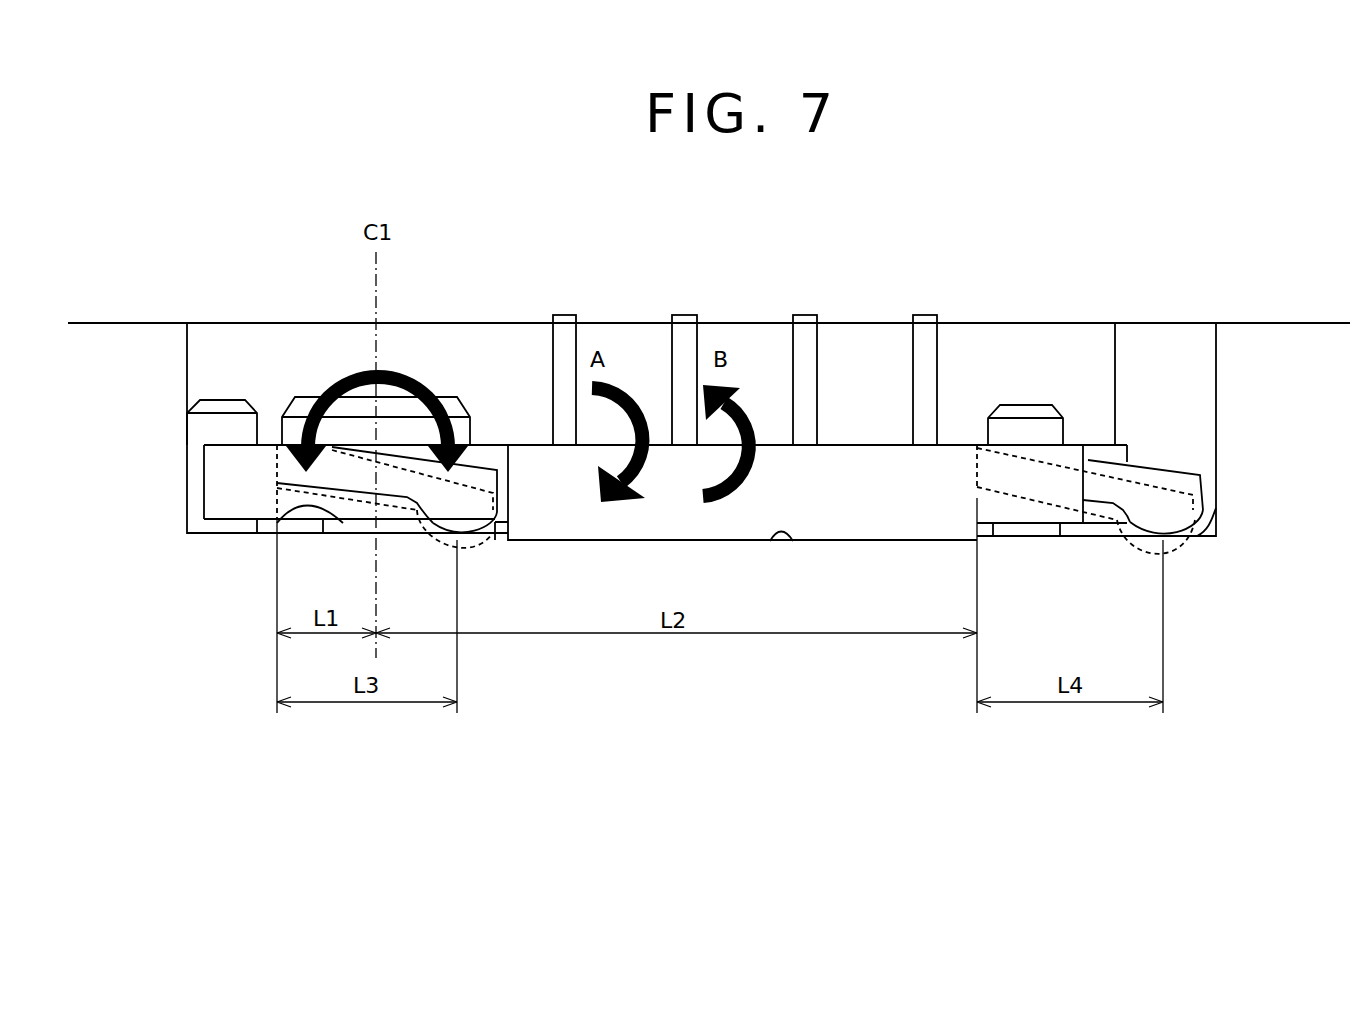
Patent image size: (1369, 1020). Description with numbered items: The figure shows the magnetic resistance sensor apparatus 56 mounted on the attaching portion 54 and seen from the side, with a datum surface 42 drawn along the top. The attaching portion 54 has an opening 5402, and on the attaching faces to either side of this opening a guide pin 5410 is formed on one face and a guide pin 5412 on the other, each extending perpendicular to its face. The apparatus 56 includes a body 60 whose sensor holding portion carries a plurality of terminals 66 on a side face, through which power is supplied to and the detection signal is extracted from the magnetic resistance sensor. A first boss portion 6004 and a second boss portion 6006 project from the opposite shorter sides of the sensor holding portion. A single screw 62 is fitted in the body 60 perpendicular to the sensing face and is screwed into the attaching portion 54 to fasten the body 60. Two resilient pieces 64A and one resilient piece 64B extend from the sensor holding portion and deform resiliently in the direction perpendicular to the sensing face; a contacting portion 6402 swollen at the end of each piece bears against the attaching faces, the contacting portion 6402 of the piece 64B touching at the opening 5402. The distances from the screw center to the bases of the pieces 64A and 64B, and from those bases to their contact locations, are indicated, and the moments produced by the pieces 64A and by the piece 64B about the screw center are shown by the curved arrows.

The mounting surface 42 is at (107, 323).
The attaching portion 54 is at (167, 258).
The guide pin 5410 is at (228, 400).
The guide pin 5412 is at (1020, 405).
The single screw 62 is at (447, 397).
The terminals 66 is at (685, 315).
The magnetic resistance sensor apparatus 56 is at (857, 446).
The body 60 is at (913, 517).
The first boss portion 6004 is at (220, 487).
The second boss portion 6006 is at (1127, 456).
The resilient pieces 64A is at (466, 515).
The resilient piece 64B is at (1165, 538).
The contacting portion 6402 is at (478, 522).
The opening 5402 is at (285, 507).